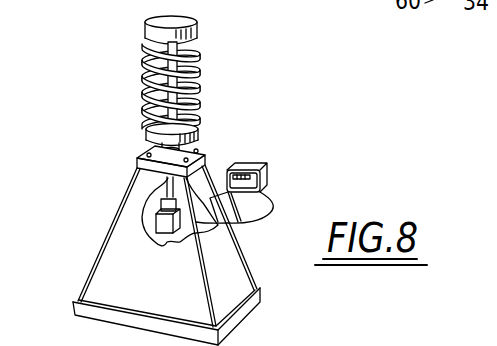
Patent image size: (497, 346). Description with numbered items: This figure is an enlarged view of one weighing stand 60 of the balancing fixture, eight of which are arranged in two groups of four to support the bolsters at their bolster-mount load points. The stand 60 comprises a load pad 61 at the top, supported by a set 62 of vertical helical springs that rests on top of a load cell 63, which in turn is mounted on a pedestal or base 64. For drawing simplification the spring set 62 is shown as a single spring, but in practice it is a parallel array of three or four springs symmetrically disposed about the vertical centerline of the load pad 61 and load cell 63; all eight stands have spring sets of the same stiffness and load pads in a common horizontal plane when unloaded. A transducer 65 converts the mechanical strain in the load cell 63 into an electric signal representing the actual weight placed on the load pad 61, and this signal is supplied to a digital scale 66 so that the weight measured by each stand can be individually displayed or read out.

The weighing stand 60 is at (103, 152).
The load pad 61 is at (193, 36).
The set of vertical helical springs 62 is at (193, 93).
The load cell 63 is at (207, 153).
The pedestal or base 64 is at (112, 248).
The transducer 65 is at (165, 239).
The digital scale 66 is at (267, 164).